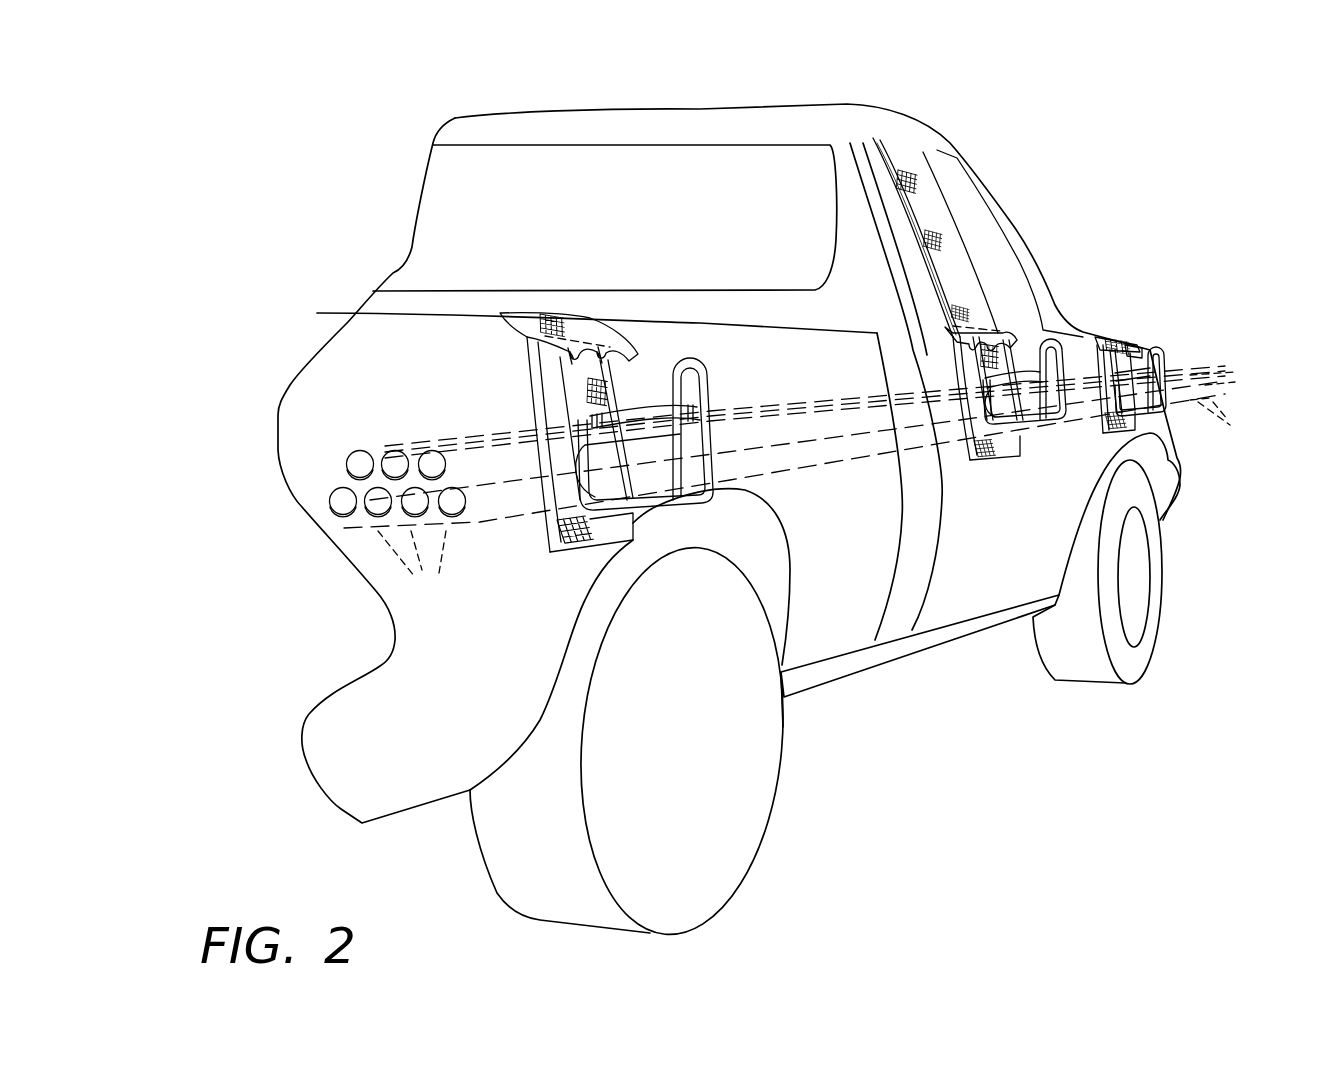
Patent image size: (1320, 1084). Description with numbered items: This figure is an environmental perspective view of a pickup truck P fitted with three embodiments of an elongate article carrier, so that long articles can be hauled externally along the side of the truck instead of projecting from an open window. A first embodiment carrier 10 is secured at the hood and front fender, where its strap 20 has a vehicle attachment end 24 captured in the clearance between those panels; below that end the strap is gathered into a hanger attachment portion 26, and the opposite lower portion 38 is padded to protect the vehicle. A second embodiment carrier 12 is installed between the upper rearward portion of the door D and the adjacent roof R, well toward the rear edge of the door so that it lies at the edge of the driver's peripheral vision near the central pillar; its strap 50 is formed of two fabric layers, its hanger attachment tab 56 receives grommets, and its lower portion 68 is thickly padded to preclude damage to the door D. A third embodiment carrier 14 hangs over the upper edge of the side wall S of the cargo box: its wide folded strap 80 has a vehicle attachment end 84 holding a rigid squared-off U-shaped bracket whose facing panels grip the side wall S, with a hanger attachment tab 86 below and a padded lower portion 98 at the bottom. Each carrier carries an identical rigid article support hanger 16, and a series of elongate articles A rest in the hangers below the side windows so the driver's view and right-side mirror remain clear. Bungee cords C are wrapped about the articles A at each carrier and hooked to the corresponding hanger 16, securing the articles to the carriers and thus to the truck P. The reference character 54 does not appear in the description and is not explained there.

The first embodiment article carrier 10 is at (1148, 304).
The second embodiment article carrier 12 is at (981, 208).
The third embodiment article carrier 14 is at (853, 405).
The rigid article support hanger 16 is at (712, 376).
The strap 20 is at (1100, 372).
The vehicle attachment end 24 is at (1105, 338).
The hanger attachment portion 26 is at (1136, 350).
The lower portion 38 is at (1100, 432).
The strap 50 is at (981, 251).
The pillar trim strip 54 is at (887, 140).
The hanger attachment tab 56 is at (1005, 335).
The lower portion 68 is at (965, 370).
The strap 80 is at (537, 370).
The vehicle attachment end 84 is at (553, 313).
The hanger attachment tab 86 is at (533, 337).
The padded lower portion 98 is at (545, 541).
The roof R is at (768, 107).
The side wall S is at (317, 347).
The door D is at (978, 533).
The pickup truck P is at (913, 656).
The bungee cords C is at (633, 415).
The elongate articles A is at (788, 483).